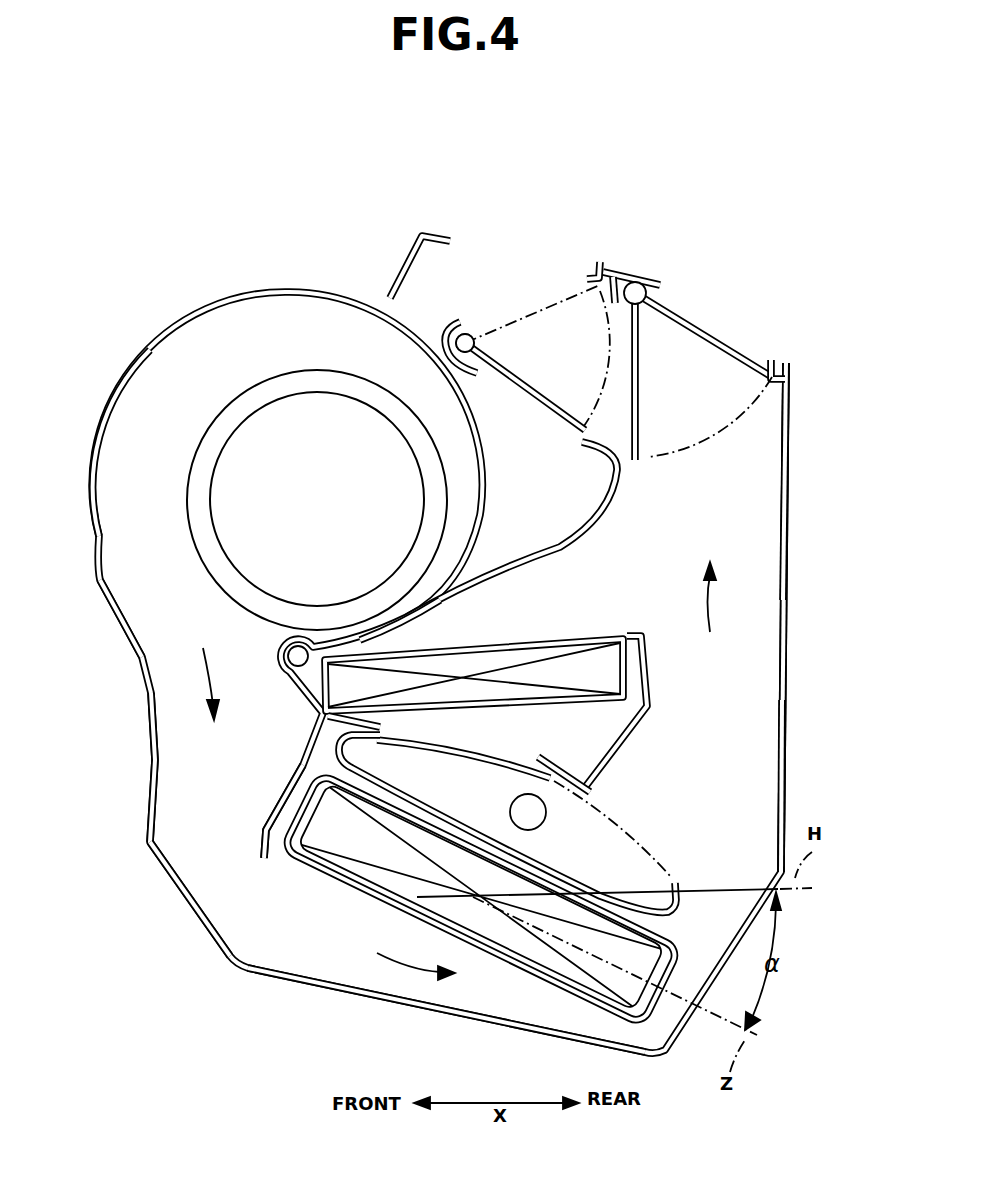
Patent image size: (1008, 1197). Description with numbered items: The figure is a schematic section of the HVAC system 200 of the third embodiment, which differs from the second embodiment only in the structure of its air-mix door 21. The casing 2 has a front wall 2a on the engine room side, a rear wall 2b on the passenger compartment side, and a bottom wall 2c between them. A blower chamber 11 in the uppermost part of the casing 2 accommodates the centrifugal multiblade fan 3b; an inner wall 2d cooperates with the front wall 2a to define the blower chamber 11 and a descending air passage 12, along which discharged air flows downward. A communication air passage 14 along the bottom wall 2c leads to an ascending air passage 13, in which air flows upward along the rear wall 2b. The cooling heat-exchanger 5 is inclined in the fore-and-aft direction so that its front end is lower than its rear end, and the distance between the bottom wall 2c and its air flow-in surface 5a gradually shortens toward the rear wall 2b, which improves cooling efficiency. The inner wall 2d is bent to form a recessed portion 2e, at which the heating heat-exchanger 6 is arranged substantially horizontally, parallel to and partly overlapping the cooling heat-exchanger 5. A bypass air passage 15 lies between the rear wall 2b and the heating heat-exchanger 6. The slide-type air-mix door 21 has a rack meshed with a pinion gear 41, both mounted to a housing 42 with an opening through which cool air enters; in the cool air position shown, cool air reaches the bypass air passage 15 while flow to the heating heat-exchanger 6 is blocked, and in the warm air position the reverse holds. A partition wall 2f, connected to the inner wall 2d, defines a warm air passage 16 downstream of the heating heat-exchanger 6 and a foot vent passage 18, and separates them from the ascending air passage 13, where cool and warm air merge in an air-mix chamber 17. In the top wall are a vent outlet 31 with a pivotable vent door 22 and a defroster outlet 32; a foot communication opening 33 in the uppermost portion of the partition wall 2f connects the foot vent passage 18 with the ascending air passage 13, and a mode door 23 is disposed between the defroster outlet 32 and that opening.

The HVAC system 200 is at (439, 593).
The casing 2 is at (298, 275).
The front wall 2a is at (121, 625).
The rear wall 2b is at (784, 623).
The bottom wall 2c is at (337, 985).
The inner wall 2d is at (370, 643).
The recessed portion 2e is at (290, 677).
The partition wall 2f is at (585, 530).
The centrifugal multiblade fan 3b is at (298, 377).
The cooling heat-exchanger 5 is at (471, 894).
The air flow-in surface 5a is at (303, 867).
The heating heat-exchanger 6 is at (500, 660).
The blower chamber 11 is at (160, 385).
The descending air passage 12 is at (185, 758).
The ascending air passage 13 is at (735, 605).
The communication air passage 14 is at (293, 947).
The bypass air passage 15 is at (735, 712).
The warm air passage 16 is at (474, 650).
The air-mix chamber 17 is at (740, 525).
The foot vent passage 18 is at (533, 507).
The air-mix door 21 is at (452, 752).
The vent door 22 is at (638, 383).
The mode door 23 is at (537, 395).
The vent outlet 31 is at (697, 327).
The defroster outlet 32 is at (507, 275).
The foot communication opening 33 is at (537, 395).
The pinion gear 41 is at (547, 822).
The housing 42 is at (682, 888).